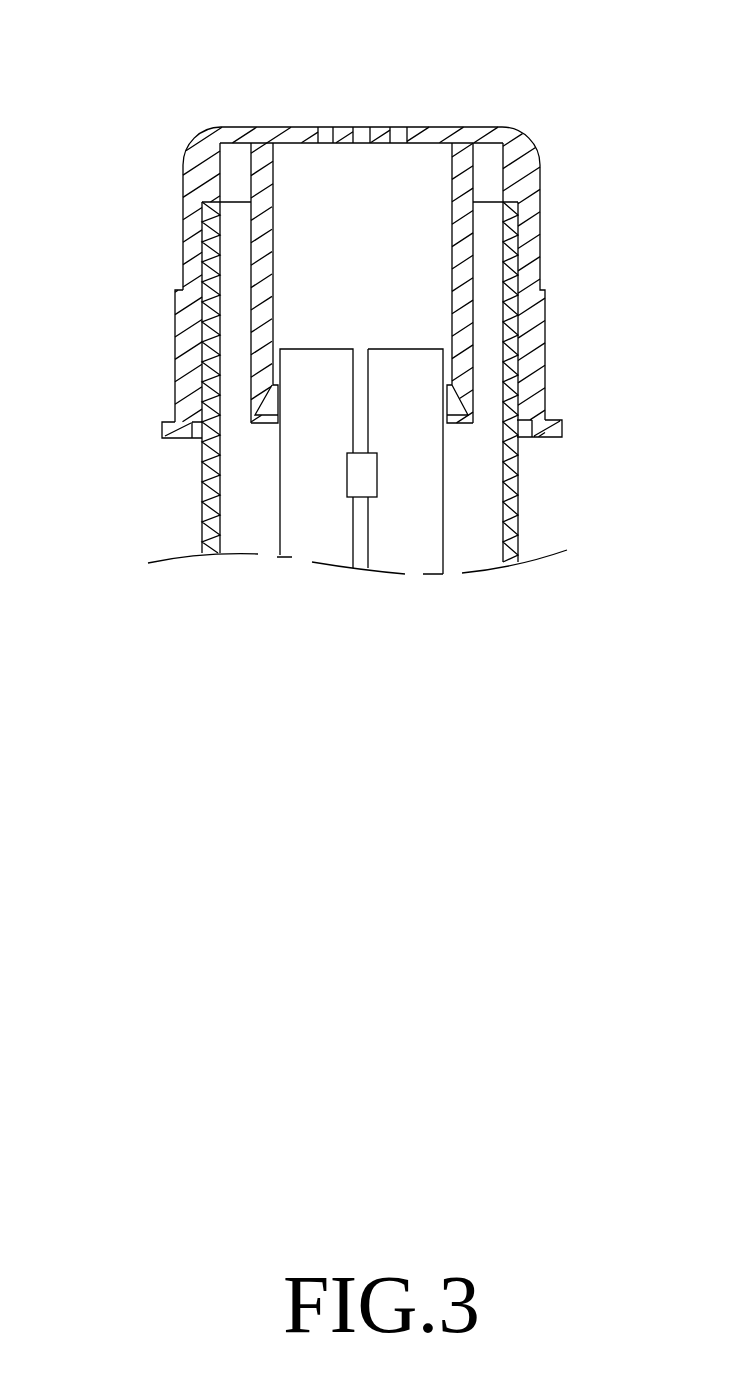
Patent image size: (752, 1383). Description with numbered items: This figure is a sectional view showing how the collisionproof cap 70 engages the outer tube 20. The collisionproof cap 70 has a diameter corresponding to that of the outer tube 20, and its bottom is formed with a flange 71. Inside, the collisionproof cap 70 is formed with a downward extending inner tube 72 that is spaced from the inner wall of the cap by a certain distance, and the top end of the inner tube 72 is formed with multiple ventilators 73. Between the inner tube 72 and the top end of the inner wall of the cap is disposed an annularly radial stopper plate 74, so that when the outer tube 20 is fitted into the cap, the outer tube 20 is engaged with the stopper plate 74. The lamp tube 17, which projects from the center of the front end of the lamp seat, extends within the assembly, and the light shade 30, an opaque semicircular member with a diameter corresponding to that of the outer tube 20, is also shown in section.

The lamp tube 17 is at (319, 522).
The outer tube 20 is at (520, 527).
The light shade 30 is at (197, 480).
The collisionproof cap 70 is at (558, 332).
The flange 71 is at (565, 431).
The inner tube 72 is at (458, 190).
The ventilators 73 is at (357, 128).
The stopper plate 74 is at (208, 203).